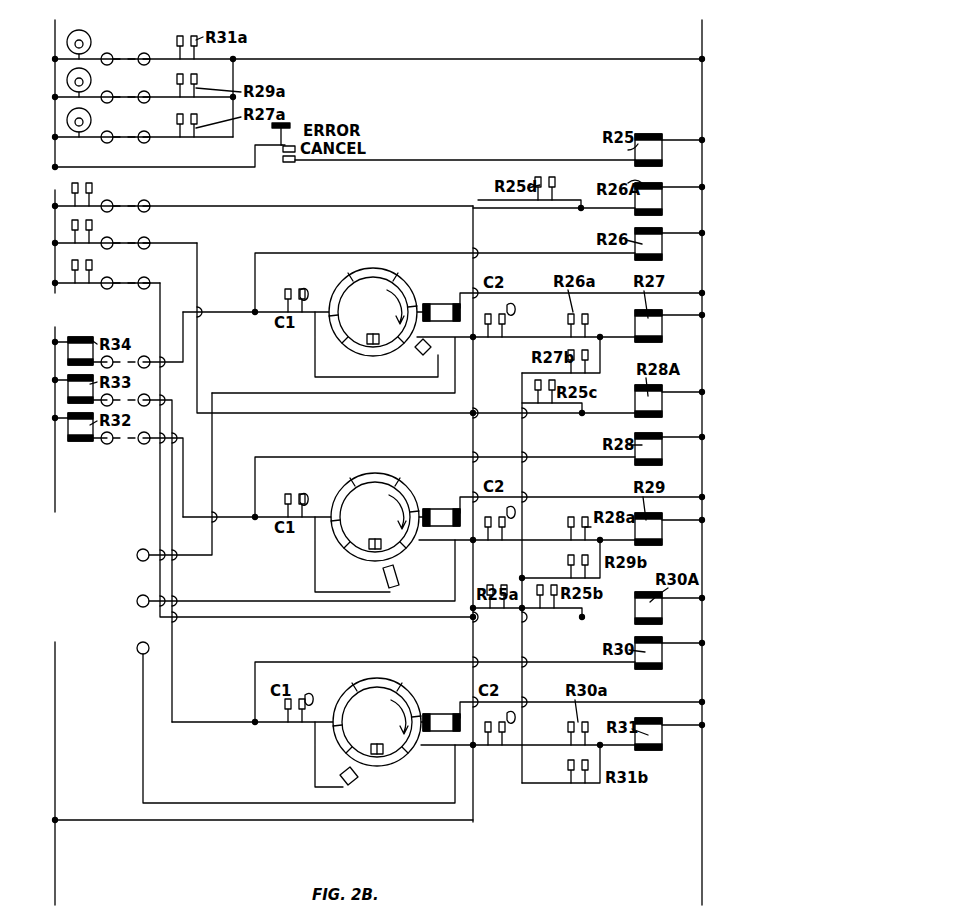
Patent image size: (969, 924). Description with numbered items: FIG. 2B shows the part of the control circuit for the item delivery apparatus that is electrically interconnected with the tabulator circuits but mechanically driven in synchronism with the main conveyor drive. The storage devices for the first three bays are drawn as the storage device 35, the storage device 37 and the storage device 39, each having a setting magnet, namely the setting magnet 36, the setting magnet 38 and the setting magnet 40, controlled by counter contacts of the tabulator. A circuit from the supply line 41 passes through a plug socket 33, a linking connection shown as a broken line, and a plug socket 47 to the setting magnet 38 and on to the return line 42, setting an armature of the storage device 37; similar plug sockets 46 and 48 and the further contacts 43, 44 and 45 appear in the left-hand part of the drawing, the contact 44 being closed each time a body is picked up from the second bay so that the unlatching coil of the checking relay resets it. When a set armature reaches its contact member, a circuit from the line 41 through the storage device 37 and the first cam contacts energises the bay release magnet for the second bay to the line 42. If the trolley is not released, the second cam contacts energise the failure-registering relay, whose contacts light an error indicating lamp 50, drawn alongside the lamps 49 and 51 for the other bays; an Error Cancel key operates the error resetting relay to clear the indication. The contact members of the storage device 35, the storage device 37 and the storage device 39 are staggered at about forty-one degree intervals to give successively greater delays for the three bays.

The plug socket 33 is at (132, 592).
The storage device 35 is at (355, 273).
The setting magnet 36 is at (440, 303).
The storage device 37 is at (357, 478).
The setting magnet 38 is at (440, 508).
The storage device 39 is at (357, 690).
The setting magnet 40 is at (440, 713).
The line 41 is at (55, 151).
The line 42 is at (57, 463).
The selector switch 43 is at (91, 268).
The contact 44 is at (91, 228).
The selector switch 45 is at (91, 190).
The terminal 46 is at (137, 555).
The plug socket 47 is at (137, 601).
The terminal 48 is at (139, 653).
The indicator lamp 49 is at (91, 118).
The error indicating lamp 50 is at (91, 78).
The indicator lamp 51 is at (91, 40).